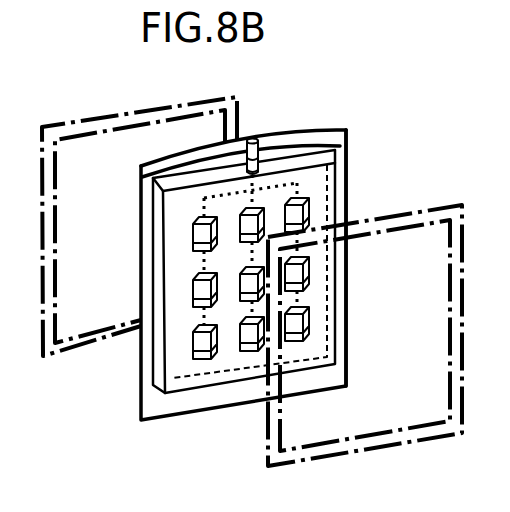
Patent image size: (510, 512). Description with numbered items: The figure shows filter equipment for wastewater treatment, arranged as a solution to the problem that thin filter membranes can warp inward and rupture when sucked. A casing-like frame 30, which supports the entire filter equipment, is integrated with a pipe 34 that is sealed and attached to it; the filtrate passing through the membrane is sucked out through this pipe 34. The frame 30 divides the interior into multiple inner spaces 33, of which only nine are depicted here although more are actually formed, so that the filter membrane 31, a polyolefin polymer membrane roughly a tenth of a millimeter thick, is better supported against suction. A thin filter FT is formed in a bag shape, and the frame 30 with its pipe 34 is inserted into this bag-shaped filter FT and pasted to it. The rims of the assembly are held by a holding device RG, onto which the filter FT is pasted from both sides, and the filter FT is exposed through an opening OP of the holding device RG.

The frame 30 is at (322, 199).
The filter membrane 31 is at (348, 153).
The inner space 33 is at (247, 340).
The pipe 34 is at (253, 138).
The opening OP is at (53, 167).
The filter FT is at (344, 142).
The holding device RG is at (268, 446).